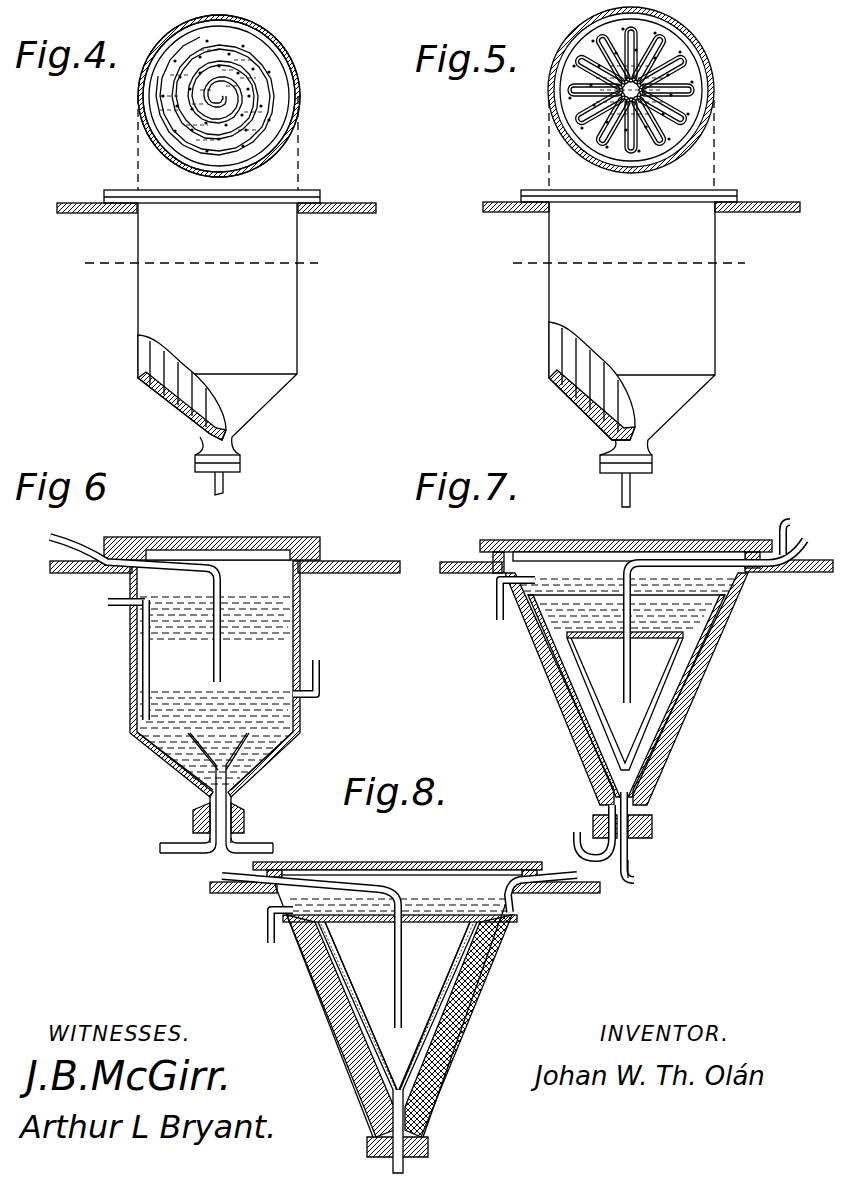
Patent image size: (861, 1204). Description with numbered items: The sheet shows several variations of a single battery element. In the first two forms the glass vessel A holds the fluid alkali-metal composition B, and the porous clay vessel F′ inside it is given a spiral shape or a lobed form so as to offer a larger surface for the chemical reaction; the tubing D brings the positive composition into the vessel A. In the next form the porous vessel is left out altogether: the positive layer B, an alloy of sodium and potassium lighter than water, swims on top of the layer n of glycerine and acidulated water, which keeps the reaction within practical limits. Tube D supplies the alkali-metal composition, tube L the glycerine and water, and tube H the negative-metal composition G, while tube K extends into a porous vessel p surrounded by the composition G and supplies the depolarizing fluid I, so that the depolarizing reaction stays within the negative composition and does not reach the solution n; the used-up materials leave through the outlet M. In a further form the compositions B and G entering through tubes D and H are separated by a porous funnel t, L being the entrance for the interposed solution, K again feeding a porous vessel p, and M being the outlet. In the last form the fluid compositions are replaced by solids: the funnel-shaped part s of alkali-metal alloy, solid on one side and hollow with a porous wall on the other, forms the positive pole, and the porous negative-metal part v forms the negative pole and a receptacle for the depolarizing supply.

In FIG. 4, the vessel A is at (290, 50).
In FIG. 5, the vessel A is at (713, 84).
In FIG. 7, the vessel A is at (712, 708).
In FIG. 8, the vessel A is at (479, 1012).
In FIG. 4, the porous clay vessel F′ is at (285, 113).
In FIG. 5, the porous clay vessel F′ is at (692, 118).
In FIG. 4, the tubing D is at (224, 484).
In FIG. 5, the tubing D is at (631, 493).
In FIG. 6, the tubing D is at (68, 553).
In FIG. 7, the tubing D is at (576, 838).
In FIG. 8, the tubing D is at (557, 893).
In FIG. 6, the fluid composition B is at (280, 597).
In FIG. 7, the fluid composition B is at (700, 655).
In FIG. 6, the outlet M is at (116, 608).
In FIG. 7, the outlet M is at (495, 607).
In FIG. 8, the outlet M is at (268, 930).
In FIG. 6, the layer n is at (146, 695).
In FIG. 6, the tube L is at (320, 673).
In FIG. 7, the tube L is at (779, 527).
In FIG. 8, the tube L is at (406, 1165).
In FIG. 6, the negative-metal composition G is at (177, 722).
In FIG. 7, the negative-metal composition G is at (558, 625).
In FIG. 6, the depolarizing fluid I is at (215, 748).
In FIG. 7, the depolarizing fluid I is at (605, 660).
In FIG. 8, the depolarizing fluid I is at (427, 947).
In FIG. 6, the porous vessel p is at (240, 757).
In FIG. 7, the porous vessel p is at (590, 695).
In FIG. 6, the tube K is at (247, 846).
In FIG. 7, the tube K is at (632, 676).
In FIG. 8, the tube K is at (238, 900).
In FIG. 6, the tube H is at (177, 854).
In FIG. 7, the tube H is at (631, 860).
In FIG. 7, the porous funnel t is at (727, 622).
In FIG. 8, the negative-metal part v is at (336, 968).
In FIG. 8, the funnel-shaped part s is at (358, 1070).